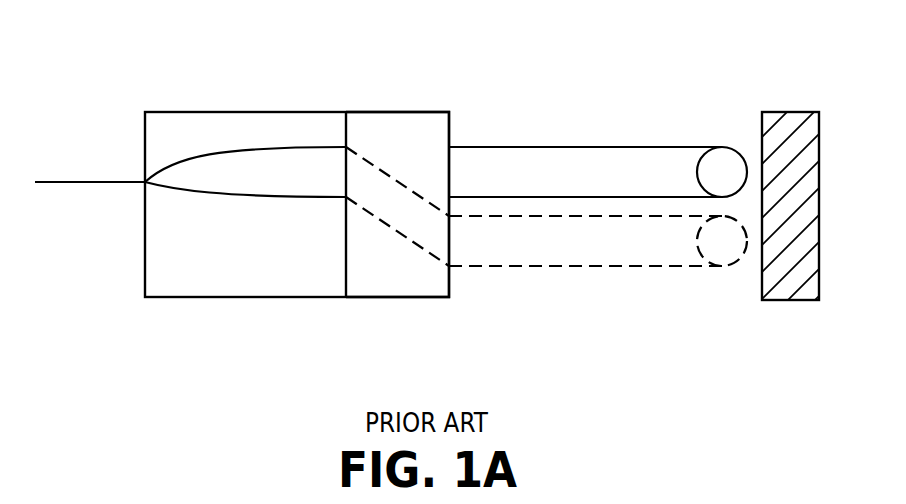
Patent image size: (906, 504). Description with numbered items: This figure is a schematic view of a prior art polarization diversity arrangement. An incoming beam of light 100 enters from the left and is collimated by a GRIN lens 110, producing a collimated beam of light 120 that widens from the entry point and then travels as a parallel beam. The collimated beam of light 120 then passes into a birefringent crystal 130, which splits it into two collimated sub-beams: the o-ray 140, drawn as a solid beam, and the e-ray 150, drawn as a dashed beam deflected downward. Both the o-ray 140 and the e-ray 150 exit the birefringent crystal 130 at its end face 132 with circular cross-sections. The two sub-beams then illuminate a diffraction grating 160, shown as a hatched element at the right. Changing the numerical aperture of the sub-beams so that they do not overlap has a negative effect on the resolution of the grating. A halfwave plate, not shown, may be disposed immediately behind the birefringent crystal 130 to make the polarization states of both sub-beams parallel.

The incoming beam of light 100 is at (78, 184).
The GRIN lens 110 is at (203, 297).
The collimated beam of light 120 is at (250, 150).
The birefringent crystal 130 is at (403, 112).
The end face 132 is at (449, 129).
The o-ray 140 is at (585, 147).
The e-ray 150 is at (552, 266).
The diffraction grating 160 is at (793, 112).